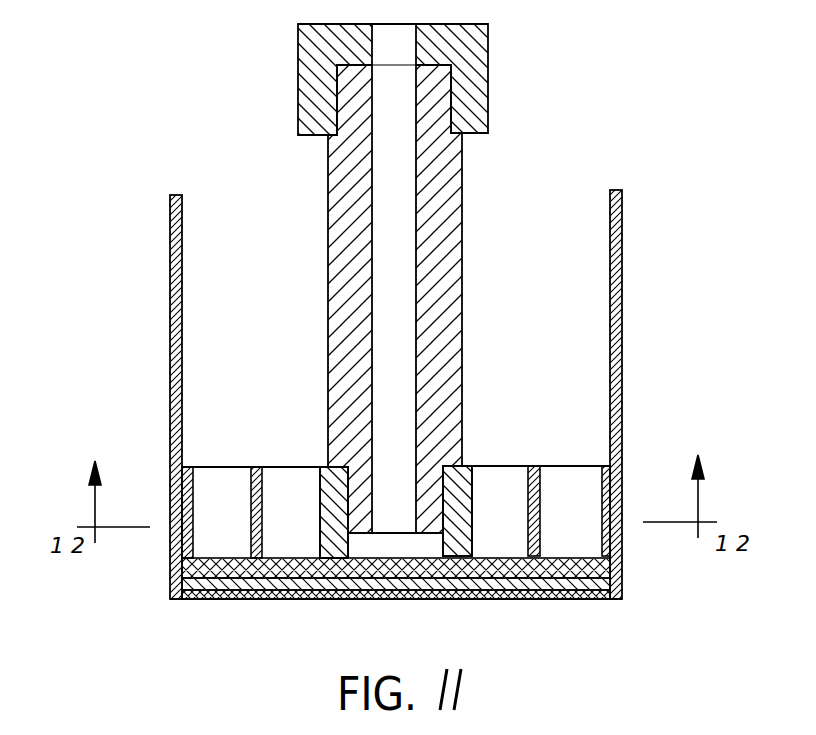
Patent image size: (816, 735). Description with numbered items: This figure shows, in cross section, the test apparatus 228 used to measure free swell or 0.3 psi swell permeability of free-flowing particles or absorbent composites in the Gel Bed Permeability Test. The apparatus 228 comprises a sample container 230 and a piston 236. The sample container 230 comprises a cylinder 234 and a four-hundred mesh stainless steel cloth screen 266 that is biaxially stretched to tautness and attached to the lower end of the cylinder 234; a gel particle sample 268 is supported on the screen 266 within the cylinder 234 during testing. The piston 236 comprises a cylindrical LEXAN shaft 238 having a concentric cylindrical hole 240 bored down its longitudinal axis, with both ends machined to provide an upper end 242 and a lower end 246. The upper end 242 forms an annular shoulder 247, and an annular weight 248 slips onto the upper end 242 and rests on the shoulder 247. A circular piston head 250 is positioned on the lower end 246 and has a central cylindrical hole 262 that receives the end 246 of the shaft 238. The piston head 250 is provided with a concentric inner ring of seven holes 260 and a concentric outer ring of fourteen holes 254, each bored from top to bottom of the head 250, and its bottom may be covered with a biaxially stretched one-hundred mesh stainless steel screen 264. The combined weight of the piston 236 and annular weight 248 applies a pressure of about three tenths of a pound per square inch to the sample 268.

The test apparatus 228 is at (570, 148).
The sample container 230 is at (170, 320).
The cylinder 234 is at (622, 377).
The piston 236 is at (500, 366).
The cylindrical LEXAN shaft 238 is at (328, 332).
The concentric cylindrical hole 240 is at (413, 171).
The upper end 242 is at (399, 299).
The lower end 246 is at (452, 560).
The annular shoulder 247 is at (482, 130).
The annular weight 248 is at (297, 65).
The circular piston head 250 is at (390, 505).
The outer ring holes 254 is at (188, 525).
The inner ring holes 260 is at (263, 497).
The cylindrical hole 262 is at (352, 572).
The stainless steel screen 264 is at (542, 575).
The stainless steel cloth screen 266 is at (373, 590).
The gel particle sample 268 is at (265, 588).